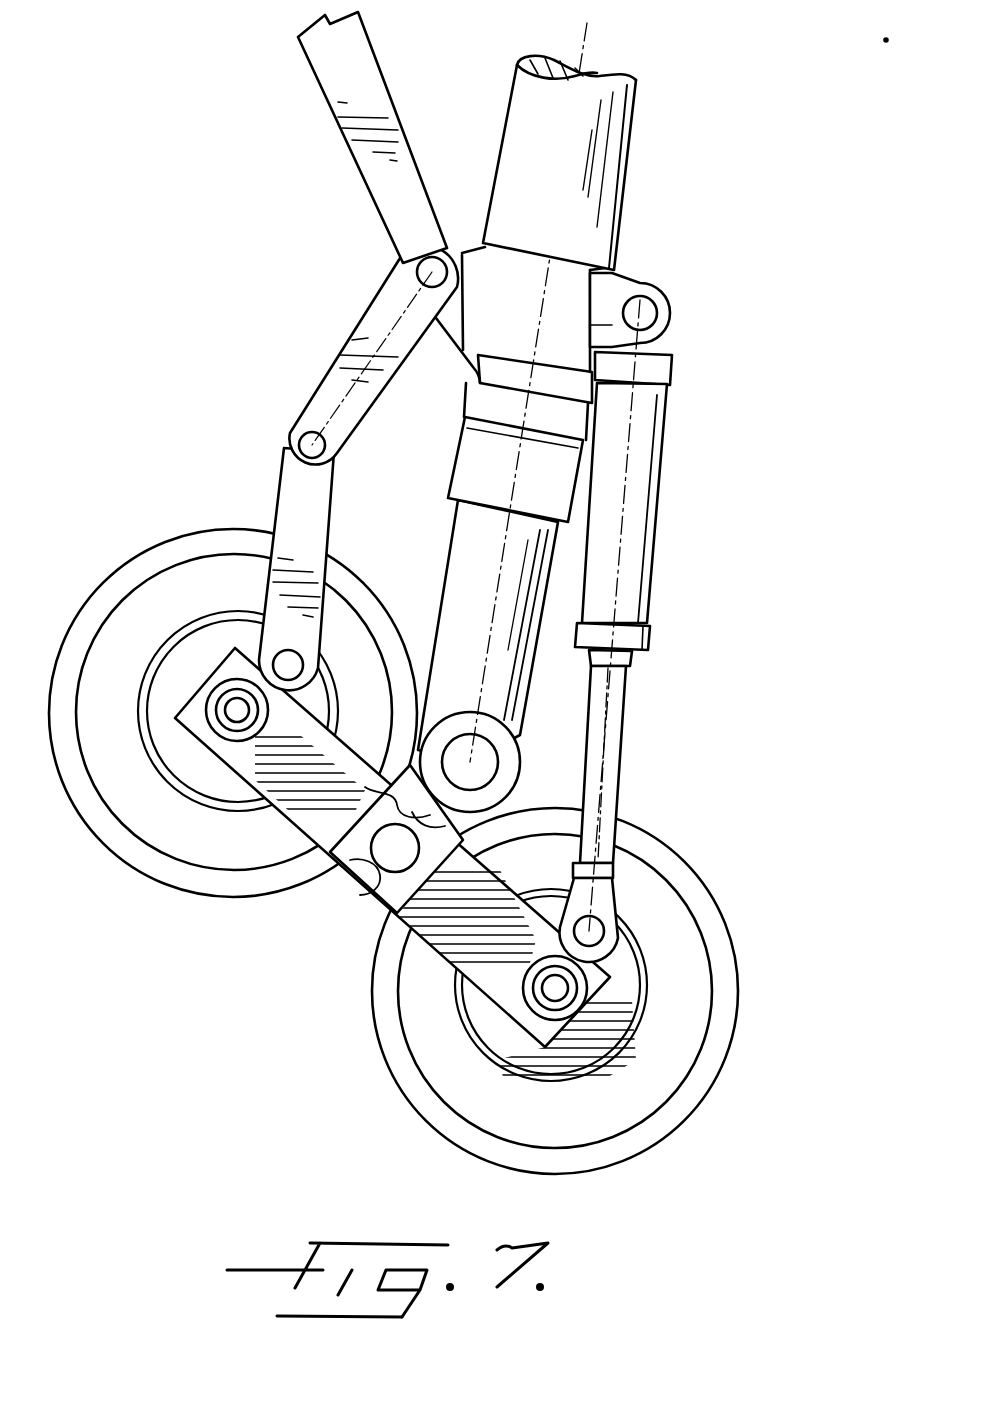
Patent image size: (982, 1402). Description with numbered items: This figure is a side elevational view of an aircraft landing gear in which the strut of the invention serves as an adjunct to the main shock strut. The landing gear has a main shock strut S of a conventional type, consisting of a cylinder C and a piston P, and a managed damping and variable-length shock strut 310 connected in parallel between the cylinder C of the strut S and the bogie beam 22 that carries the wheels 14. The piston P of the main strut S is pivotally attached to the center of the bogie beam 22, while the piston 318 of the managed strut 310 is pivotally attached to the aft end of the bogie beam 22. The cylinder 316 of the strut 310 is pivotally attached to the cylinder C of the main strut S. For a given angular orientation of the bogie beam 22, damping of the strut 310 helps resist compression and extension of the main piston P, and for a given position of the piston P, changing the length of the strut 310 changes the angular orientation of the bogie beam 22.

The wheels 14 is at (135, 867).
The bogie beam 22 is at (420, 973).
The piston P is at (462, 555).
The cylinder C is at (634, 115).
The main shock strut S is at (597, 214).
The managed damping and variable-length shock strut 310 is at (687, 563).
The cylinder 316 is at (653, 547).
The piston 318 is at (607, 748).